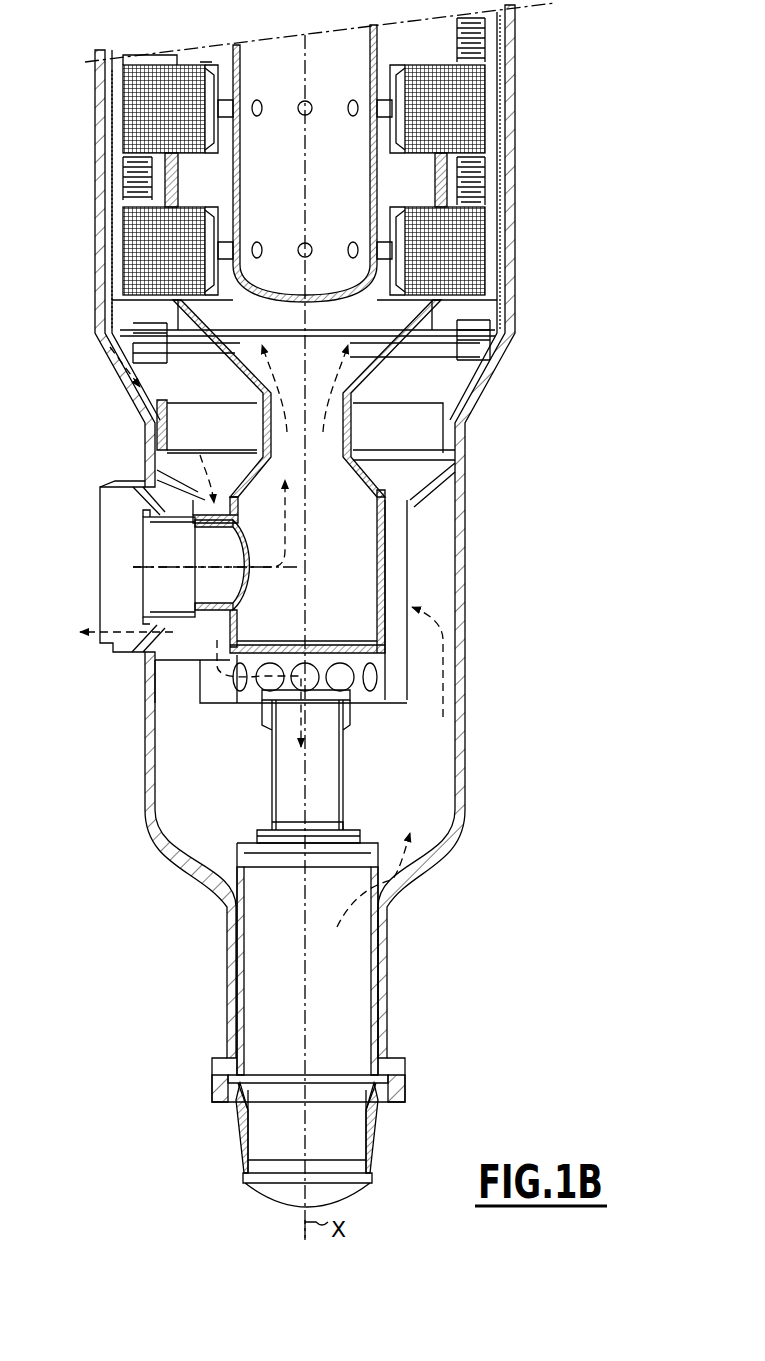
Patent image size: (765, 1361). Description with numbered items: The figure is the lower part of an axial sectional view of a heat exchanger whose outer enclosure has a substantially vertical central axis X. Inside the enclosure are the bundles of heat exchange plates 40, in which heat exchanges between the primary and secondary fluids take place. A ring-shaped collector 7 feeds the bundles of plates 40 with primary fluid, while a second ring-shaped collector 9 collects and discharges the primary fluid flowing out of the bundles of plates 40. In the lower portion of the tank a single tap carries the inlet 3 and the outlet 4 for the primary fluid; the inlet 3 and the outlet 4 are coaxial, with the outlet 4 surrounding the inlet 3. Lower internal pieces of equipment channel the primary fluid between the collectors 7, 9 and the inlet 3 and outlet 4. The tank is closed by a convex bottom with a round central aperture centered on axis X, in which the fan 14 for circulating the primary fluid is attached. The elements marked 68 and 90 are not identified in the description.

The inlet 3 is at (170, 517).
The outlet 4 is at (130, 493).
The ring-shaped collector 7 is at (443, 173).
The ring-shaped collector 9 is at (503, 183).
The fan 14 is at (350, 988).
The bundles of heat exchange plates 40 is at (460, 93).
The coil carrier tube 68 is at (323, 298).
The funnel plate 90 is at (213, 290).